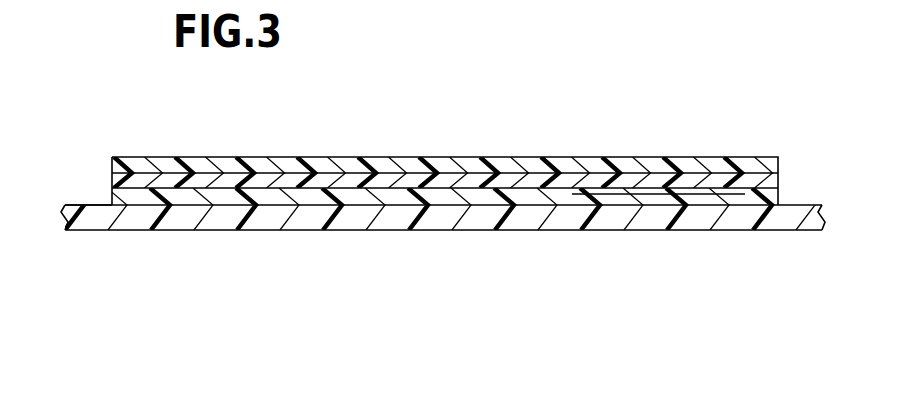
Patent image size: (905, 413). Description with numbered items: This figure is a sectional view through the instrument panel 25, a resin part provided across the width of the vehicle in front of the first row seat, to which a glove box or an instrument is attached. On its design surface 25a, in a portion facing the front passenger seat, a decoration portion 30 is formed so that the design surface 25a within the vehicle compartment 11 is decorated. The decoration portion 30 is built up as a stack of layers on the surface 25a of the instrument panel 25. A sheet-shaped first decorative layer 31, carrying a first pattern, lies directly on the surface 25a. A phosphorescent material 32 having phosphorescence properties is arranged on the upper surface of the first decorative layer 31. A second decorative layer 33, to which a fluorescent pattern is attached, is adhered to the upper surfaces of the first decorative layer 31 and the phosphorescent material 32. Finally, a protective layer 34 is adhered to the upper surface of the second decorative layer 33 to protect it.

The vehicle compartment 11 is at (445, 52).
The instrument panel 25 is at (132, 231).
The design surface 25a is at (98, 205).
The decoration portion 30 is at (745, 308).
The first decorative layer 31 is at (757, 207).
The phosphorescent material 32 is at (720, 192).
The second decorative layer 33 is at (675, 181).
The protective layer 34 is at (624, 168).